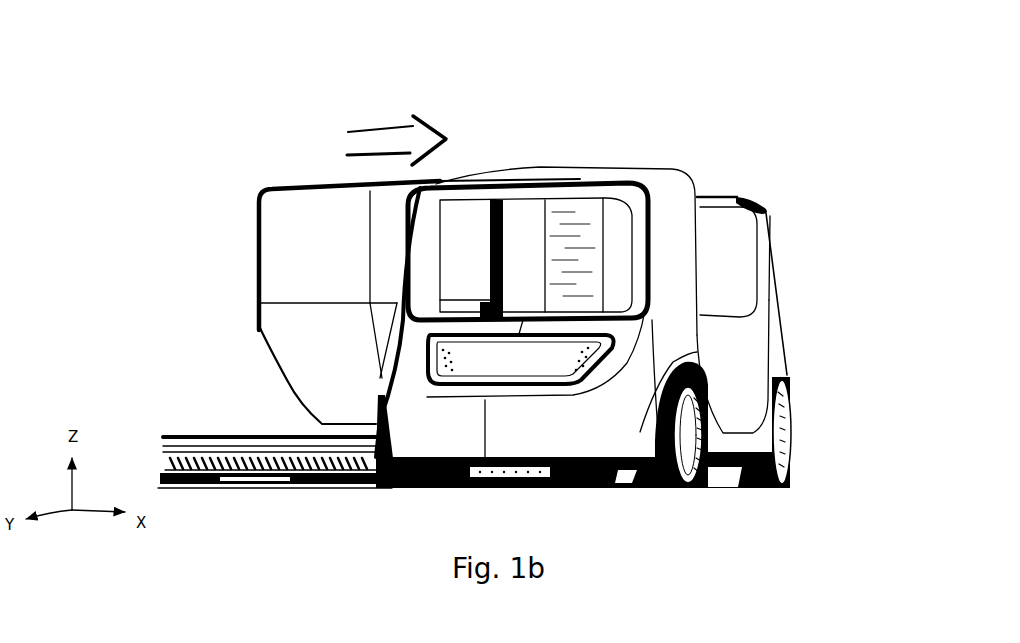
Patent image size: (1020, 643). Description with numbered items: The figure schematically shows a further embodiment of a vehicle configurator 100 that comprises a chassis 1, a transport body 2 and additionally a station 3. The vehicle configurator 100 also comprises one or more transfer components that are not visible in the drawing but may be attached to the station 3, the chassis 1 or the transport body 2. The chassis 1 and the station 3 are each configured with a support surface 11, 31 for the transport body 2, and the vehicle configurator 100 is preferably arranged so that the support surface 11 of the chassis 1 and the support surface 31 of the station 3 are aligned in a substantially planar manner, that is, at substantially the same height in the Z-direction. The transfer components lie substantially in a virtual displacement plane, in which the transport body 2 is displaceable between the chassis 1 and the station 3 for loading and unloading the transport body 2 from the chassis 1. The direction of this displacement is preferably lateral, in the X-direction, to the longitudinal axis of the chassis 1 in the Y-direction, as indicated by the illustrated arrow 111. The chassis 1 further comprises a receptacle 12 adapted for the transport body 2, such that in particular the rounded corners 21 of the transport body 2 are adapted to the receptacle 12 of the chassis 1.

The vehicle configurator 100 is at (229, 52).
The arrow 111 is at (379, 116).
The chassis 1 is at (661, 156).
The support surface 11 is at (738, 426).
The receptacle 12 is at (774, 252).
The transport body 2 is at (246, 164).
The rounded corners 21 is at (270, 351).
The station 3 is at (276, 490).
The support surface 31 is at (216, 432).